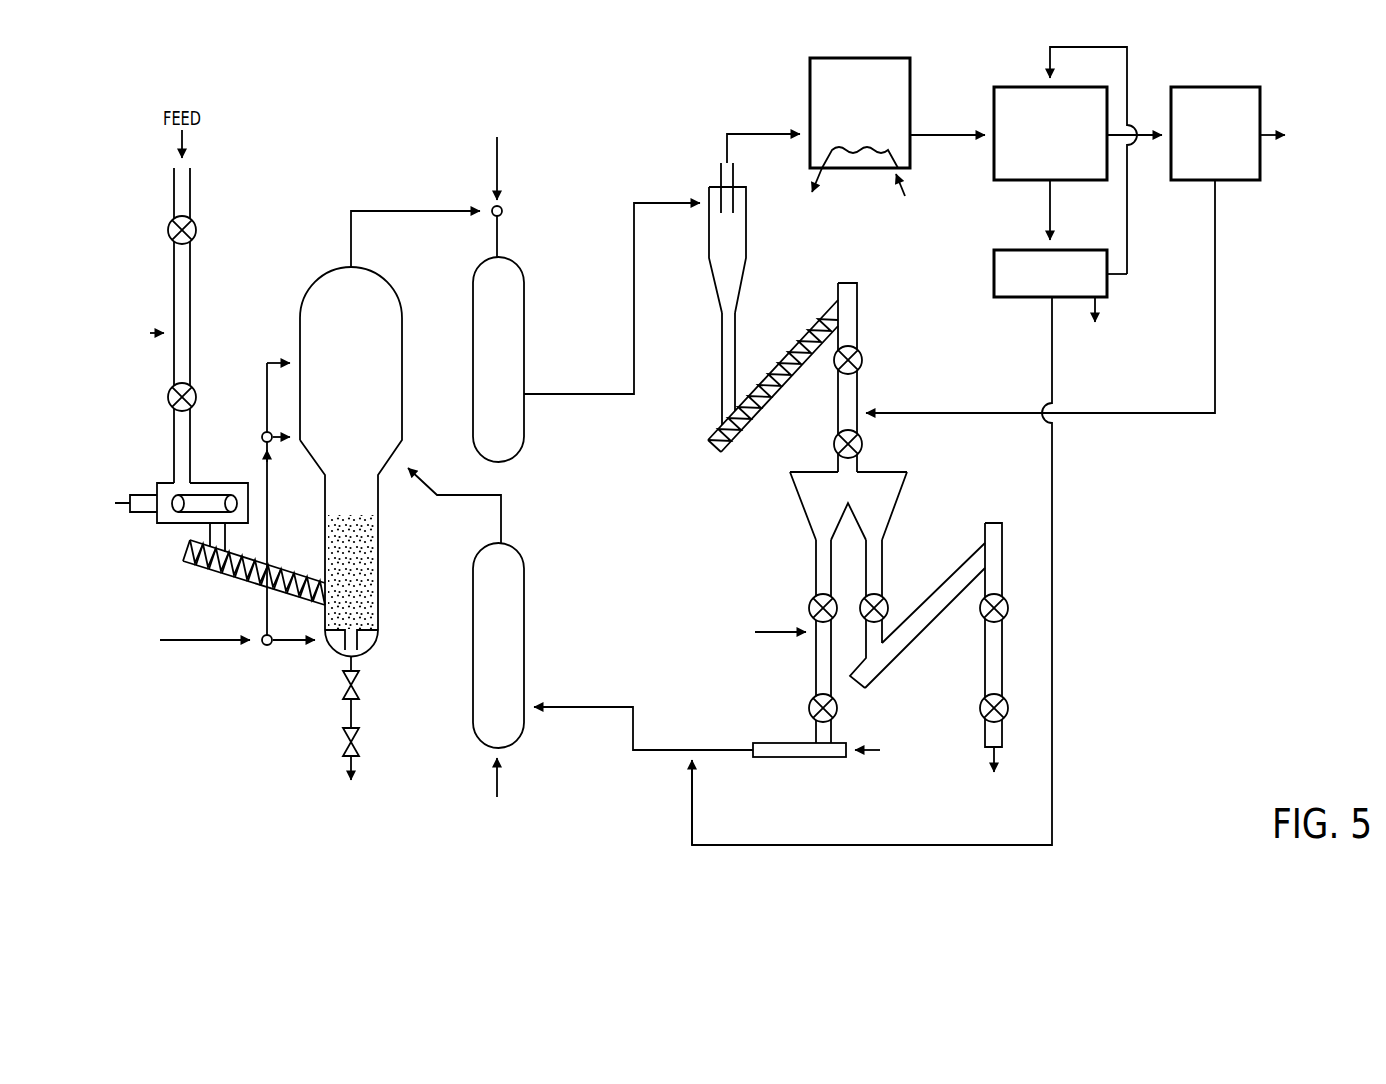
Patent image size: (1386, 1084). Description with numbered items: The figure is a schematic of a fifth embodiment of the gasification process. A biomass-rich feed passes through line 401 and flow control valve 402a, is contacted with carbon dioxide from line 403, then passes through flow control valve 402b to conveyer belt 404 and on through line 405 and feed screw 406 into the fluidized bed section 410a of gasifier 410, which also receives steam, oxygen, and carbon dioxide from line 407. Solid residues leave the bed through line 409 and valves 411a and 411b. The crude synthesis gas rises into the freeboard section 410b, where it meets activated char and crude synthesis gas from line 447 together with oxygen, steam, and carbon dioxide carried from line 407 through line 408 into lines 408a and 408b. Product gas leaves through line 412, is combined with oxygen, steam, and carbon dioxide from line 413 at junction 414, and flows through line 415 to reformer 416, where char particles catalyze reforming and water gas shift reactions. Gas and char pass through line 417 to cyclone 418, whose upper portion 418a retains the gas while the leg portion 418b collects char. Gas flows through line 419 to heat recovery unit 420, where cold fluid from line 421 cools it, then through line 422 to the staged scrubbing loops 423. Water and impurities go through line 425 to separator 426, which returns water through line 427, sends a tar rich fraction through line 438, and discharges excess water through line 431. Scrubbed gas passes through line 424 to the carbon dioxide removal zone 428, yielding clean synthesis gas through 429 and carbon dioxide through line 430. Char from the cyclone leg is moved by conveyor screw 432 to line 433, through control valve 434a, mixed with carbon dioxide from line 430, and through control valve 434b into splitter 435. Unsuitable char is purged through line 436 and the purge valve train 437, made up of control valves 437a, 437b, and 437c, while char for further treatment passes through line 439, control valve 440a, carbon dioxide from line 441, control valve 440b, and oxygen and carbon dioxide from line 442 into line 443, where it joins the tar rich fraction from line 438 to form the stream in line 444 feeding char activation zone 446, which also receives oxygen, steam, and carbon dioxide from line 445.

The line 401 is at (192, 283).
The flow control valve 402a is at (170, 218).
The flow control valve 402b is at (168, 410).
The line 403 is at (145, 326).
The conveyer belt 404 is at (195, 482).
The line 405 is at (185, 535).
The feed screw 406 is at (208, 574).
The line 407 is at (180, 638).
The line 408 is at (267, 479).
The line 408a is at (276, 446).
The line 408b is at (267, 362).
The line 409 is at (346, 741).
The gasifier 410 is at (368, 435).
The fluidized bed section 410a is at (364, 565).
The freeboard section 410b is at (402, 350).
The valve 411a is at (359, 686).
The valve 411b is at (345, 722).
The line 412 is at (360, 206).
The line 413 is at (498, 174).
The junction 414 is at (487, 202).
The line 415 is at (498, 231).
The reformer 416 is at (473, 288).
The line 417 is at (632, 224).
The cyclone 418 is at (695, 294).
The upper portion 418a is at (715, 278).
The leg portion 418b is at (722, 368).
The line 419 is at (722, 141).
The heat recovery unit 420 is at (810, 89).
The line 421 is at (910, 186).
The line 422 is at (952, 127).
The staged scrubbing loops 423 is at (1025, 85).
The line 424 is at (1142, 110).
The line 425 is at (1050, 210).
The separator 426 is at (994, 280).
The line 427 is at (1126, 244).
The CO2 removal zone 428 is at (1200, 87).
The line 429 is at (1276, 129).
The line 430 is at (1215, 413).
The line 431 is at (1101, 308).
The conveyor screw 432 is at (792, 340).
The line 433 is at (848, 371).
The control valve 434a is at (862, 360).
The control valve 434b is at (834, 447).
The splitter 435 is at (884, 473).
The line 436 is at (896, 599).
The char purge chute 437 is at (955, 675).
The control valve 437a is at (887, 602).
The control valve 437b is at (982, 620).
The control valve 437c is at (981, 707).
The line 438 is at (1052, 357).
The line 439 is at (822, 635).
The control valve 440a is at (808, 606).
The control valve 440b is at (836, 710).
The line 441 is at (785, 642).
The line 442 is at (863, 758).
The line 443 is at (695, 748).
The line 444 is at (633, 727).
The line 445 is at (485, 788).
The char activation zone 446 is at (471, 640).
The line 447 is at (423, 470).